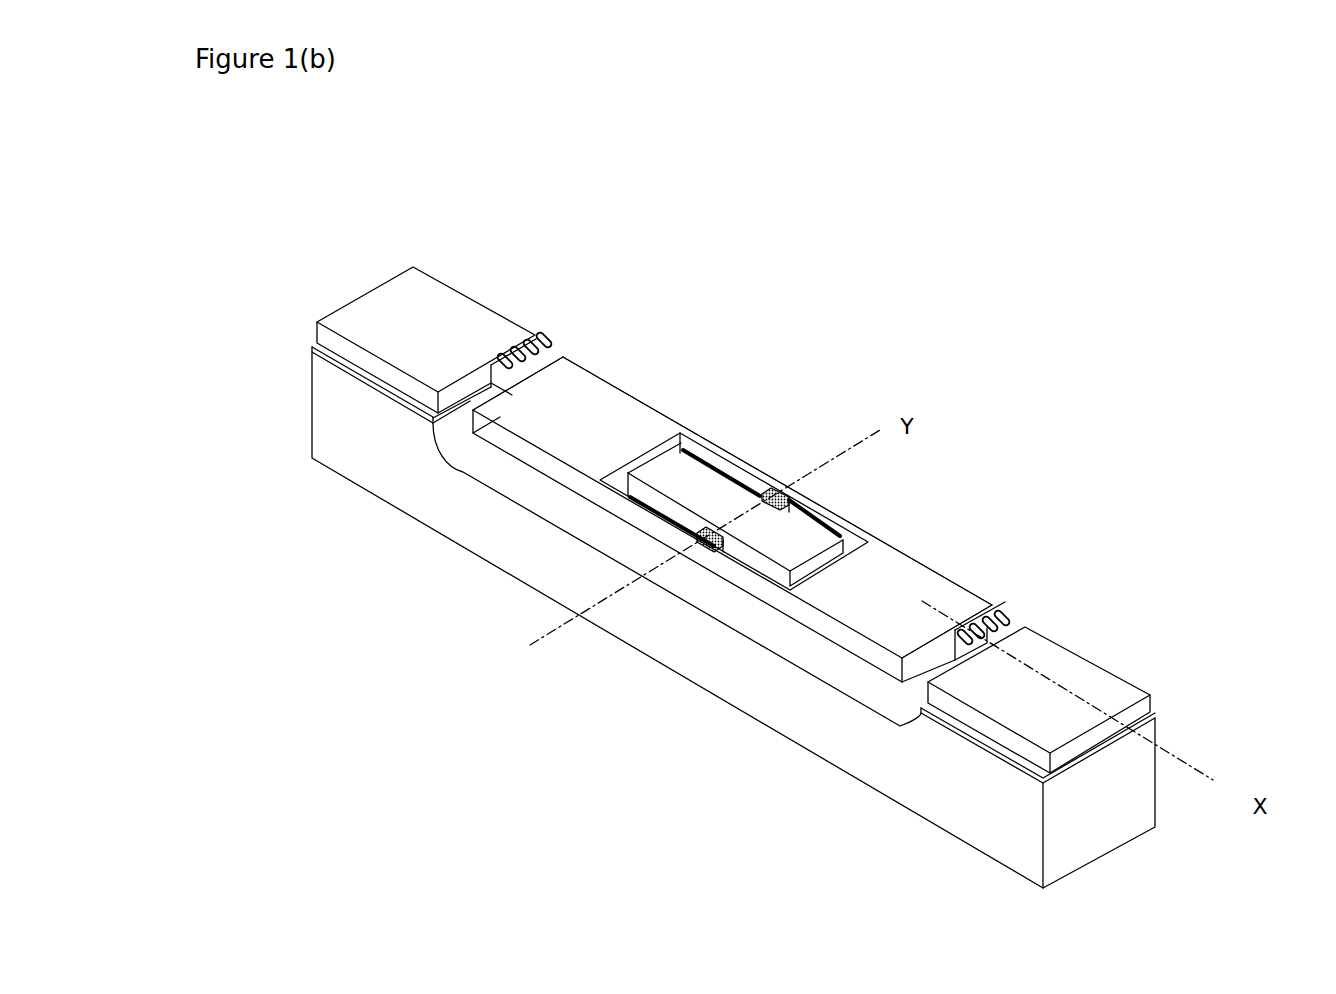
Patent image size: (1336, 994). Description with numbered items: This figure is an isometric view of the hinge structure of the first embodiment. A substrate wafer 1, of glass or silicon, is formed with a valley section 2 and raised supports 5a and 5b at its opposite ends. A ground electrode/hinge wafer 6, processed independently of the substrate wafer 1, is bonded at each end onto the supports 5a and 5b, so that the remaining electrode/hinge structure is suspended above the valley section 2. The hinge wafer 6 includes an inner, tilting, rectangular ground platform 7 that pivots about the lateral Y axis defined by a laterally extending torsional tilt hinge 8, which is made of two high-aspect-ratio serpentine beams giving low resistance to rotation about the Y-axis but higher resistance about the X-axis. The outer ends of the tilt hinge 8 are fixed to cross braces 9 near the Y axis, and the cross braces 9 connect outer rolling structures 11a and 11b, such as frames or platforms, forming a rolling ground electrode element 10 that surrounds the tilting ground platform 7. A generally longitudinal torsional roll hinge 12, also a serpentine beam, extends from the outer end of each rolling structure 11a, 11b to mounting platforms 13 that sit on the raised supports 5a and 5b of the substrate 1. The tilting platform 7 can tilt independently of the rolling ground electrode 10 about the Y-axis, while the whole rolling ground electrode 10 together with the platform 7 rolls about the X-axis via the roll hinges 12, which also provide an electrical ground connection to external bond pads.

The substrate wafer 1 is at (328, 452).
The valley section 2 is at (501, 491).
The raised support 5a is at (315, 368).
The raised support 5b is at (1153, 727).
The ground electrode/hinge wafer 6 is at (352, 278).
The tilting ground platform 7 is at (805, 531).
The torsional tilt hinge 8 is at (703, 497).
The cross brace 9 is at (712, 525).
The rolling ground electrode element 10 is at (948, 571).
The outer rolling structure 11a is at (597, 397).
The outer rolling structure 11b is at (880, 605).
The torsional roll hinge 12 is at (537, 345).
The mounting platform 13 is at (422, 303).